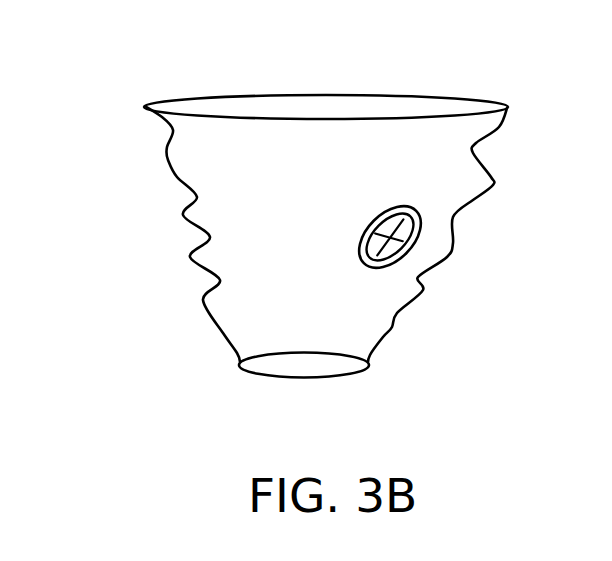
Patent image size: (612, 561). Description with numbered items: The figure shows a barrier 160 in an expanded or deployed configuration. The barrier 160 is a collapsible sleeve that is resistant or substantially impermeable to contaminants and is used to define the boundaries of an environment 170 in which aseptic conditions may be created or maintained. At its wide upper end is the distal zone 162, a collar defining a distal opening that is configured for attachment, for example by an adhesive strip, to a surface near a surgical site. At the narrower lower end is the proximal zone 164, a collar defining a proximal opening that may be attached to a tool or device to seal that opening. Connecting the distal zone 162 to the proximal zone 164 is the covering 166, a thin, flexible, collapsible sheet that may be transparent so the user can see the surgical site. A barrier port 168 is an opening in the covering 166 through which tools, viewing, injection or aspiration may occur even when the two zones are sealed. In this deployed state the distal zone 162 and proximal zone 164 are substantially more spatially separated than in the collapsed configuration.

The barrier 160 is at (292, 206).
The distal zone 162 is at (168, 108).
The proximal zone 164 is at (258, 367).
The covering 166 is at (242, 305).
The barrier port 168 is at (418, 258).
The environment 170 is at (350, 305).